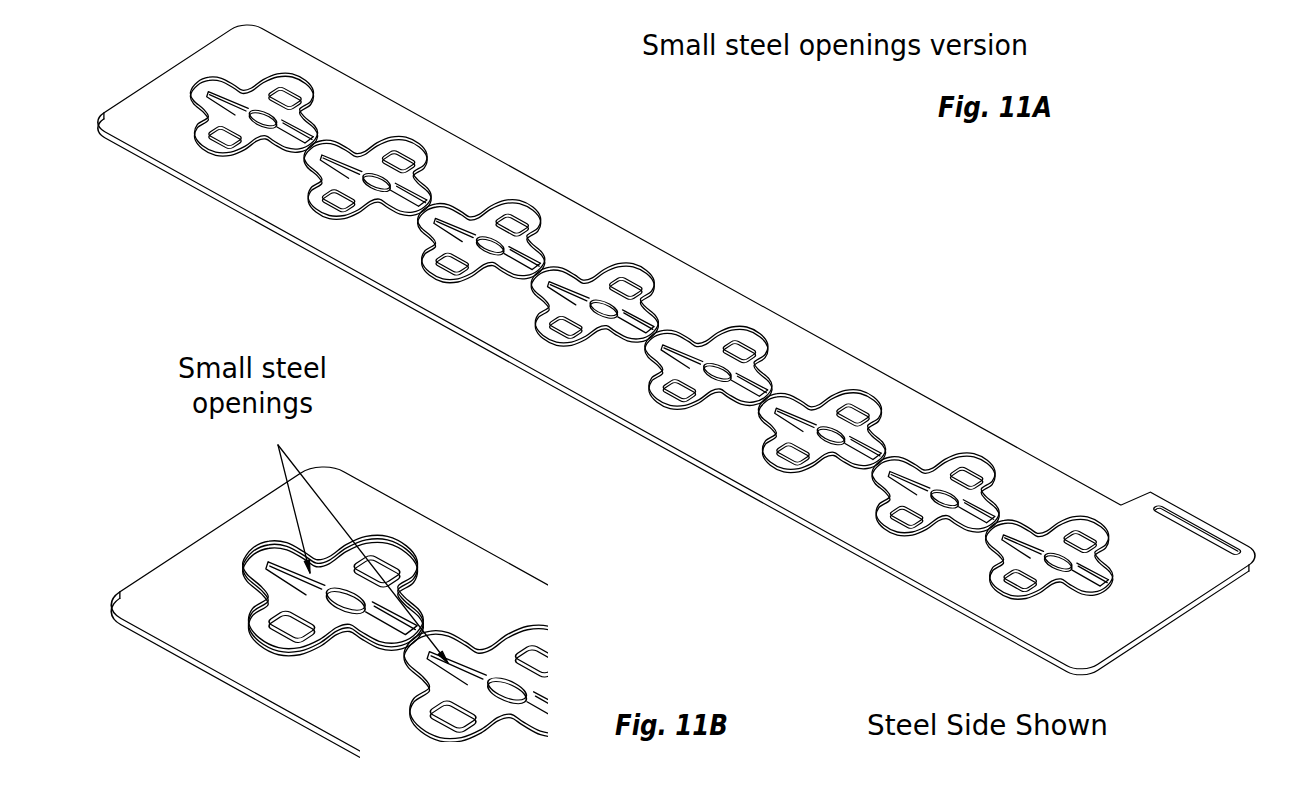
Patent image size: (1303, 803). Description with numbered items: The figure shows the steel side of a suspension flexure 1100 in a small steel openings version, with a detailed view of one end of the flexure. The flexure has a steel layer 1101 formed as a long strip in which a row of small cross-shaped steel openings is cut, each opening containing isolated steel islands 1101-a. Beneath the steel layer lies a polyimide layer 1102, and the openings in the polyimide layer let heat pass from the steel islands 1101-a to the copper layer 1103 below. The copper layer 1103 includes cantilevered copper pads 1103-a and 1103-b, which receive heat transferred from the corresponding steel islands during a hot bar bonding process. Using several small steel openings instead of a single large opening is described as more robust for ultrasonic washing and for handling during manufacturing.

In FIG. 11A, the suspension flexure 1100 is at (985, 419).
In FIG. 11B, the steel layer 1101 is at (208, 598).
In FIG. 11B, the isolated steel island 1101-a is at (381, 554).
In FIG. 11B, the polyimide layer 1102 is at (389, 599).
In FIG. 11B, the copper layer 1103 is at (352, 609).
In FIG. 11B, the cantilevered copper pad 1103-a is at (514, 679).
In FIG. 11B, the cantilevered copper pad 1103-b is at (498, 701).